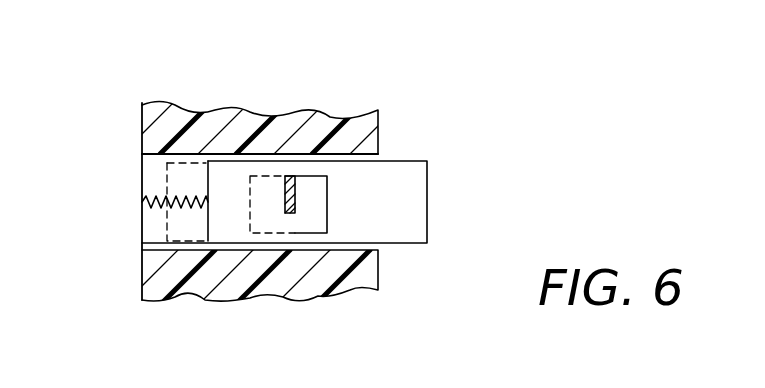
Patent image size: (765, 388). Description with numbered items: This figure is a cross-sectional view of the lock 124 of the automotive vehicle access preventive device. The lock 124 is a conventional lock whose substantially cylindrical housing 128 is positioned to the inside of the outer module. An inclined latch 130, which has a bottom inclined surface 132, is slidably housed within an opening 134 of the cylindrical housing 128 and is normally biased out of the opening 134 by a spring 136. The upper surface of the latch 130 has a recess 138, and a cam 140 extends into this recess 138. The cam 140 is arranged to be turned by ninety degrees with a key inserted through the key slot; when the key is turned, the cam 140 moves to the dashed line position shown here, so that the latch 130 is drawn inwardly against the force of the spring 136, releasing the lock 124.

The lock 124 is at (110, 197).
The cylindrical housing 128 is at (157, 130).
The inclined latch 130 is at (399, 154).
The bottom inclined surface 132 is at (408, 190).
The opening 134 is at (347, 247).
The spring 136 is at (150, 203).
The recess 138 is at (326, 222).
The cam 140 is at (297, 196).